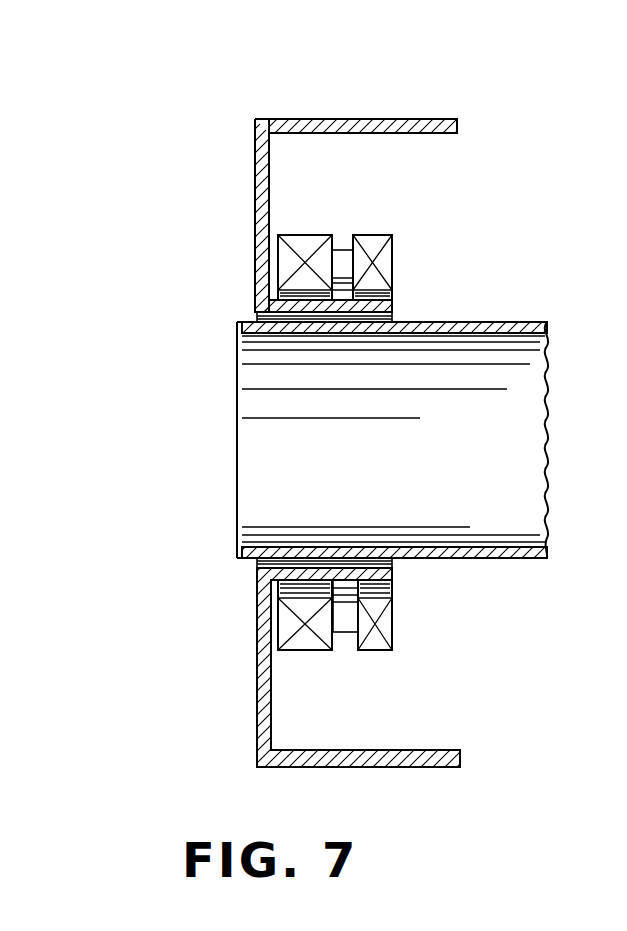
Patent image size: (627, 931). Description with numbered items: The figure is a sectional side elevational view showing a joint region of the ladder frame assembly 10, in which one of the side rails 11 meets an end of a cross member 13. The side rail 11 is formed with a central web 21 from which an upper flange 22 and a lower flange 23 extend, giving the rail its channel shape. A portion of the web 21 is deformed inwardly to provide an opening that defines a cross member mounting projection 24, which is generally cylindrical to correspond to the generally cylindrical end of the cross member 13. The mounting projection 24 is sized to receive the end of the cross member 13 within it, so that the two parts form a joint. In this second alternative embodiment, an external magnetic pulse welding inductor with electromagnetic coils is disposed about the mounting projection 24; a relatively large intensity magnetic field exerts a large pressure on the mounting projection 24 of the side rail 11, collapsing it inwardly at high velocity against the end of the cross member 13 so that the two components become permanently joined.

The ladder frame assembly 10 is at (165, 658).
The side rail 11 is at (245, 97).
The cross member 13 is at (478, 550).
The central web 21 is at (258, 240).
The upper flange 22 is at (352, 120).
The lower flange 23 is at (385, 767).
The cross member mounting projection 24 is at (385, 305).